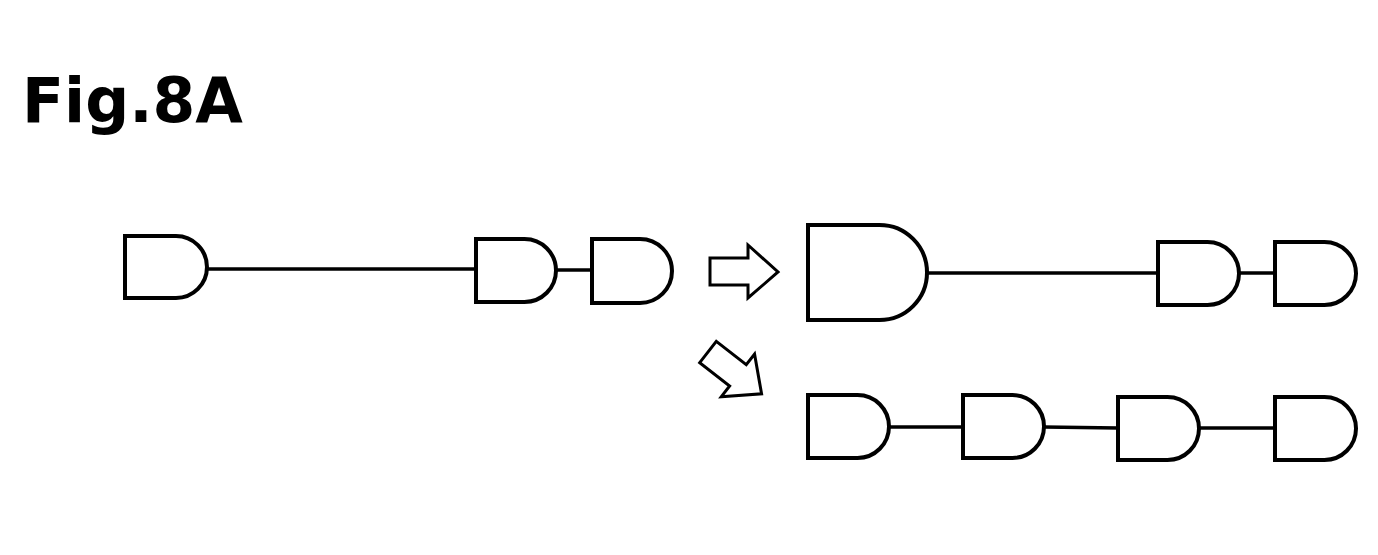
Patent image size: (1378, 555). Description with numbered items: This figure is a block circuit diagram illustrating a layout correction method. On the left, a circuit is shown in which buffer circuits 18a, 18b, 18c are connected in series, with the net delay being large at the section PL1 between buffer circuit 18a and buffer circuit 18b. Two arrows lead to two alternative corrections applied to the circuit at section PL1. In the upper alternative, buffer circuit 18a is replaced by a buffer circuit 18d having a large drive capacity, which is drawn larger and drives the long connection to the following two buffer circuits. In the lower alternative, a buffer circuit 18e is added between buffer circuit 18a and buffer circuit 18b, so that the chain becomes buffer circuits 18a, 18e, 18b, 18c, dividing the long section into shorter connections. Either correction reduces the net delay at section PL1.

The buffer circuit 18a is at (148, 236).
The buffer circuit 18b is at (502, 239).
The buffer circuit 18c is at (613, 239).
The buffer circuit having a large drive capacity 18d is at (843, 225).
The buffer circuit 18e is at (985, 458).
The section PL1 is at (470, 277).